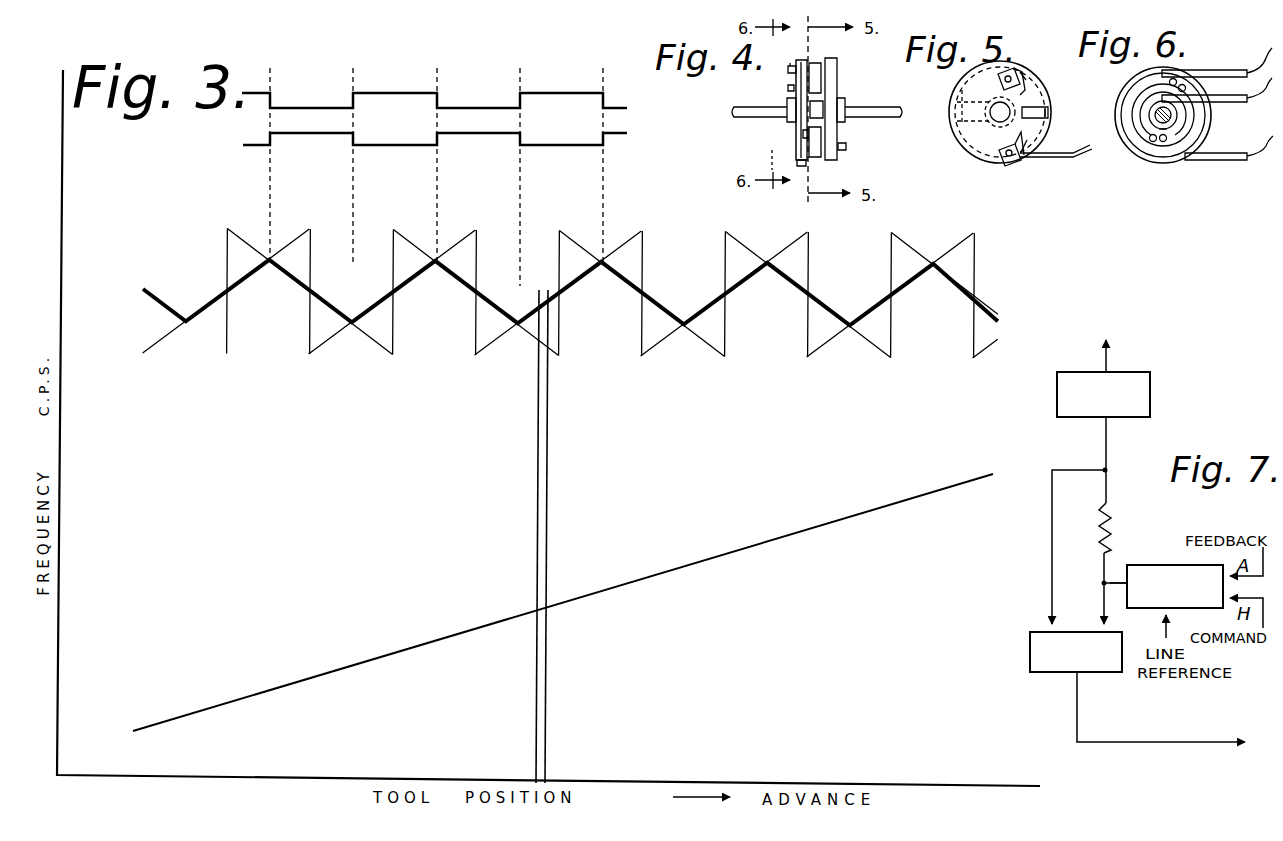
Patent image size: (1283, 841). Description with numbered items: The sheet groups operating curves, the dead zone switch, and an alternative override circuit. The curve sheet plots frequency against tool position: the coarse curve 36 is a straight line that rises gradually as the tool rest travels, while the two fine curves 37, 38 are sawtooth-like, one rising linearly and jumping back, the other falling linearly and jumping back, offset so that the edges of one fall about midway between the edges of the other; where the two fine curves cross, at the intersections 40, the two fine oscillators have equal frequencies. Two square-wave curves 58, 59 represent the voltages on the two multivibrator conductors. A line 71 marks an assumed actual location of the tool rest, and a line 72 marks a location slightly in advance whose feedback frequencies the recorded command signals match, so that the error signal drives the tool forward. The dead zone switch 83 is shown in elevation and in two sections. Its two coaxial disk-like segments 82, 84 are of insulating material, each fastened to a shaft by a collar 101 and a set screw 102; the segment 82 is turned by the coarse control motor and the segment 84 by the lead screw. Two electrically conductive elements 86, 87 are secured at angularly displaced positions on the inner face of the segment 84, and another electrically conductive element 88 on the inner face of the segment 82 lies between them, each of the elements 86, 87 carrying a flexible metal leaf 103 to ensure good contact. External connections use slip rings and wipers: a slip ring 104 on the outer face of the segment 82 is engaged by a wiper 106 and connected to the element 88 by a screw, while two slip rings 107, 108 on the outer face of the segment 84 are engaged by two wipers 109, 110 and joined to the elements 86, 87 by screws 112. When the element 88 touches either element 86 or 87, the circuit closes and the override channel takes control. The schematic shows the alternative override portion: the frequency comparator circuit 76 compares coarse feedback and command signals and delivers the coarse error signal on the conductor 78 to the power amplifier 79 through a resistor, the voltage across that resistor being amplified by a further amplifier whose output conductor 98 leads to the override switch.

In FIG. 3, the curve 36 is at (387, 655).
In FIG. 3, the curve 37 is at (290, 276).
In FIG. 3, the curve 38 is at (214, 300).
In FIG. 3, the intersections 40 is at (437, 258).
In FIG. 3, the curve 58 is at (308, 107).
In FIG. 3, the curve 59 is at (391, 143).
In FIG. 3, the line 71 is at (538, 548).
In FIG. 3, the line 72 is at (548, 516).
In FIG. 7, the frequency comparator circuit 76 is at (1149, 565).
In FIG. 7, the conductor 78 is at (1112, 586).
In FIG. 7, the power amplifier 79 is at (1150, 383).
In FIG. 4, the segment 82 is at (831, 161).
In FIG. 5, the segment 82 is at (962, 142).
In FIG. 4, the dead zone switch 83 is at (752, 141).
In FIG. 4, the segment 84 is at (805, 164).
In FIG. 6, the segment 84 is at (1172, 162).
In FIG. 4, the electrically conductive element 86 is at (814, 64).
In FIG. 5, the electrically conductive element 86 is at (1003, 63).
In FIG. 4, the electrically conductive element 87 is at (815, 143).
In FIG. 5, the electrically conductive element 87 is at (998, 154).
In FIG. 4, the electrically conductive element 88 is at (823, 102).
In FIG. 5, the electrically conductive element 88 is at (1049, 108).
In FIG. 7, the conductor 98 is at (1202, 742).
In FIG. 4, the collar 101 is at (785, 121).
In FIG. 5, the collar 101 is at (951, 122).
In FIG. 6, the collar 101 is at (1177, 118).
In FIG. 7, the collar 101 is at (1112, 520).
In FIG. 5, the set screw 102 is at (957, 103).
In FIG. 6, the set screw 102 is at (1140, 98).
In FIG. 7, the set screw 102 is at (1030, 652).
In FIG. 4, the flexible metal leaf 103 is at (802, 133).
In FIG. 5, the flexible metal leaf 103 is at (1030, 80).
In FIG. 5, the slip ring 104 is at (968, 90).
In FIG. 4, the wiper 106 is at (847, 147).
In FIG. 5, the wiper 106 is at (1046, 160).
In FIG. 6, the wiper 106 is at (1225, 161).
In FIG. 6, the slip ring 107 is at (1137, 150).
In FIG. 5, the slip ring 108 is at (1049, 113).
In FIG. 6, the slip ring 108 is at (1140, 113).
In FIG. 4, the wiper 109 is at (790, 67).
In FIG. 6, the wiper 109 is at (1228, 70).
In FIG. 4, the wiper 110 is at (788, 88).
In FIG. 6, the wiper 110 is at (1226, 102).
In FIG. 6, the screws 112 is at (1182, 84).